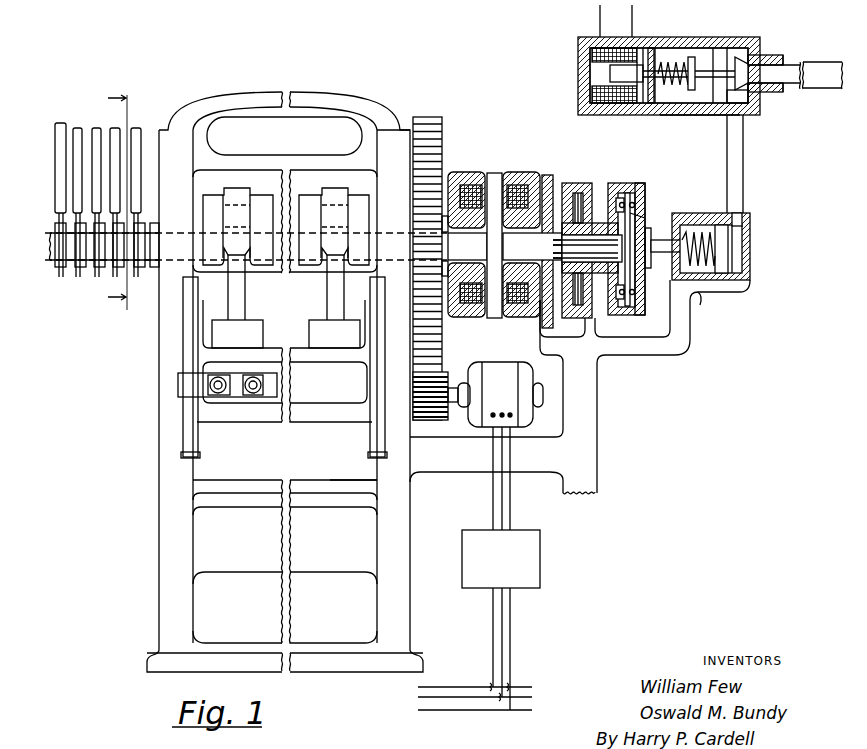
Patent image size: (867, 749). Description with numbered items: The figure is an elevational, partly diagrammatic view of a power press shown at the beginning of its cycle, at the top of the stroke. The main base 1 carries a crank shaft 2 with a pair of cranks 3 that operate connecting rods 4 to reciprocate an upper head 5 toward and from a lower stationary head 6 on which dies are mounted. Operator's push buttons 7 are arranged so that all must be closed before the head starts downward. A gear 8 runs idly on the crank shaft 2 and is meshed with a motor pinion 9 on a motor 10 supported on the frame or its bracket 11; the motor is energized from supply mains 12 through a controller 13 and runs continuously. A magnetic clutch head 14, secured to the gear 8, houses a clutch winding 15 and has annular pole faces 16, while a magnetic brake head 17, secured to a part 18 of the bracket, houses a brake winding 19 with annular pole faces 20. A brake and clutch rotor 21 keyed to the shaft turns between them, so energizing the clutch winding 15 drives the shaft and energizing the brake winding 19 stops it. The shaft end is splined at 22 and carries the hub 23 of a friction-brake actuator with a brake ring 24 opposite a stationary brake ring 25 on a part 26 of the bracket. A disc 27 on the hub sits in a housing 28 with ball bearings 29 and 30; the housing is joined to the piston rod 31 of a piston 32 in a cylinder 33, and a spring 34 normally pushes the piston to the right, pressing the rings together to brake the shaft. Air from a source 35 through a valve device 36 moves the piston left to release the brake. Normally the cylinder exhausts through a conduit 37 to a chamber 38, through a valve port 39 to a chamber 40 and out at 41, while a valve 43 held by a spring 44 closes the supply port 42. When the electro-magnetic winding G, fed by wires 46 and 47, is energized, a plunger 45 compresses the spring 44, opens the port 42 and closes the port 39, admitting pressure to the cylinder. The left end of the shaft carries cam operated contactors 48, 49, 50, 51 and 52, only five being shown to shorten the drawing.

The main base 1 is at (172, 601).
The crank shaft 2 is at (388, 216).
The cranks 3 is at (263, 265).
The connecting rods 4 is at (246, 305).
The upper head 5 is at (284, 392).
The lower stationary head 6 is at (340, 490).
The operator's push buttons 7 is at (221, 397).
The gear 8 is at (443, 124).
The motor pinion 9 is at (446, 368).
The motor 10 is at (495, 394).
The bracket 11 is at (589, 405).
The supply mains 12 is at (524, 692).
The controller 13 is at (501, 559).
The magnetic clutch head 14 is at (455, 318).
The clutch winding 15 is at (474, 318).
The annular pole faces 16 is at (476, 172).
The magnetic brake head 17 is at (533, 318).
The part of the stationary bracket 18 is at (548, 175).
The brake winding 19 is at (514, 317).
The annular pole faces 20 is at (511, 172).
The brake and clutch rotor 21 is at (494, 319).
The splines 22 is at (557, 246).
The hub 23 is at (598, 223).
The brake ring 24 is at (566, 183).
The stationary brake ring 25 is at (583, 183).
The part of the bracket 26 is at (610, 183).
The disc 27 is at (628, 216).
The housing 28 is at (642, 183).
The ball bearing 29 is at (626, 193).
The ball bearing 30 is at (634, 193).
The piston rod 31 is at (655, 238).
The piston 32 is at (720, 225).
The cylinder 33 is at (684, 220).
The spring 34 is at (712, 282).
The source of air pressure 35 is at (827, 90).
The valve device 36 is at (712, 37).
The conduit 37 is at (743, 166).
The chamber 38 is at (752, 109).
The valve port 39 is at (705, 115).
The chamber 40 is at (698, 54).
The atmospheric outlet 41 is at (686, 46).
The port 42 is at (755, 90).
The valve 43 is at (768, 56).
The spring 44 is at (682, 87).
The plunger 45 is at (590, 72).
The wire 46 is at (598, 16).
The wire 47 is at (633, 14).
The cam operated contactor 48 is at (137, 128).
The cam operated contactor 49 is at (115, 128).
The cam operated contactor 50 is at (97, 128).
The cam operated contactor 51 is at (77, 128).
The cam operated contactor 52 is at (61, 123).
The electro-magnetic winding G is at (578, 97).